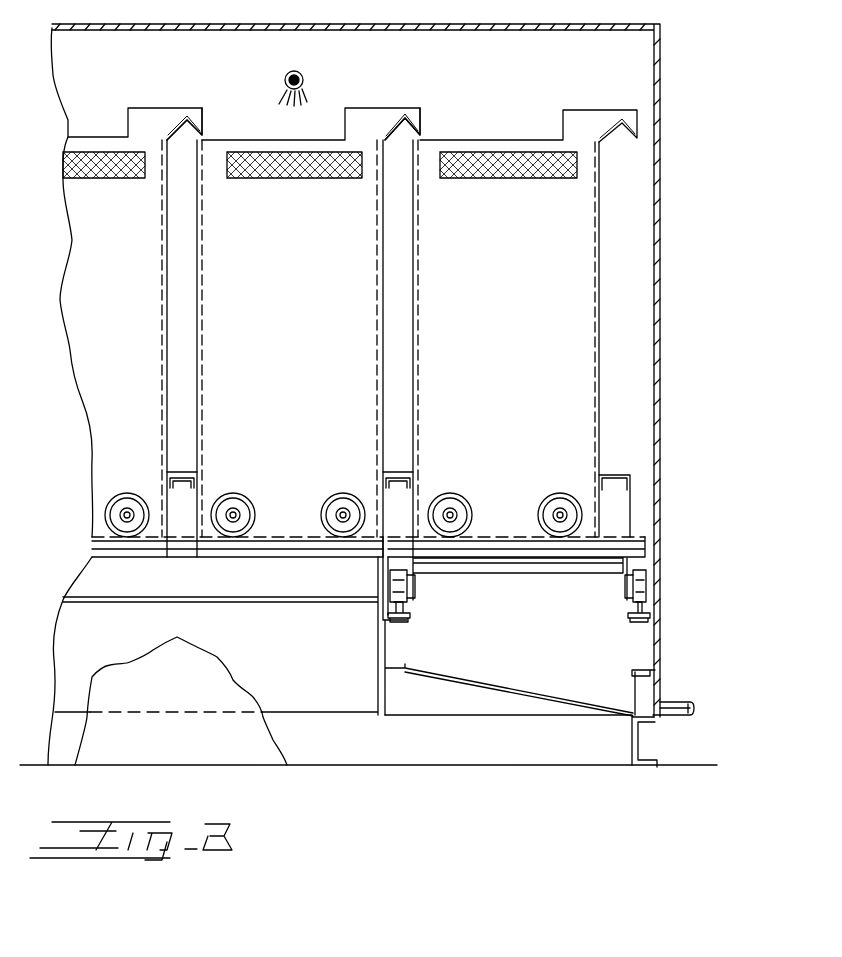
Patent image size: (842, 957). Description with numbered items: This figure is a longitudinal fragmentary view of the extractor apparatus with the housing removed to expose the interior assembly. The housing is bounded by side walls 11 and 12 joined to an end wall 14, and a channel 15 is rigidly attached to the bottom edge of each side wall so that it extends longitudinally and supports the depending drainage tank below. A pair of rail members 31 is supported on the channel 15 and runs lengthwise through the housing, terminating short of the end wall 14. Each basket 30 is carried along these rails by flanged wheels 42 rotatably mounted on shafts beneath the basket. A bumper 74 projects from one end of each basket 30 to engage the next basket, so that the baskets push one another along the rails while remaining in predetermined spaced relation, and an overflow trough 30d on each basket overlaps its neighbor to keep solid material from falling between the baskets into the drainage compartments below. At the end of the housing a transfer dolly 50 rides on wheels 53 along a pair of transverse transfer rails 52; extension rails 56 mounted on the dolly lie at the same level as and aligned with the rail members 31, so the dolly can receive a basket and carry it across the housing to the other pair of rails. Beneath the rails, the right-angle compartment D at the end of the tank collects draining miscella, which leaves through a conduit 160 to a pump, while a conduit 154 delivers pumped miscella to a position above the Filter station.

The side wall 11 is at (558, 70).
The side wall 12 is at (190, 690).
The end wall 14 is at (662, 420).
The channel 15 is at (184, 578).
The basket 30 is at (318, 412).
The overflow trough 30d is at (204, 109).
The rail member 31 is at (308, 556).
The flanged wheel 42 is at (256, 516).
The transfer dolly 50 is at (534, 579).
The transfer rail 52 is at (410, 614).
The wheel 53 is at (390, 583).
The extension rail 56 is at (648, 548).
The bumper 74 is at (183, 472).
The conduit 154 is at (303, 75).
The conduit 160 is at (684, 698).
The compartment D is at (515, 664).